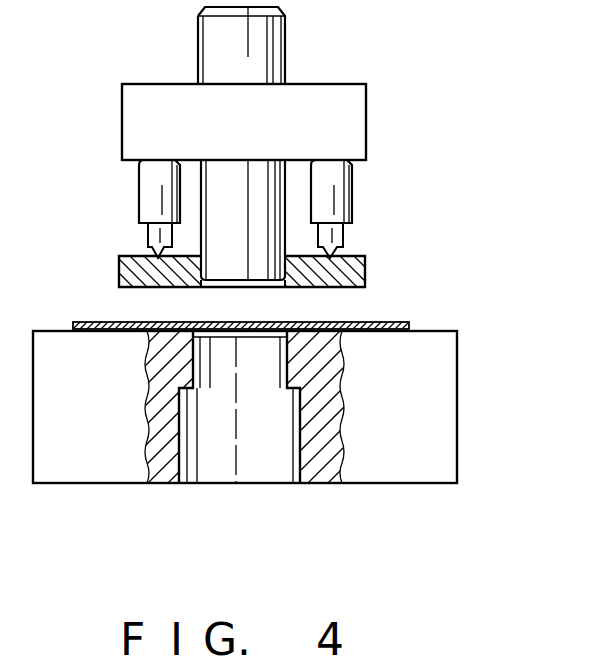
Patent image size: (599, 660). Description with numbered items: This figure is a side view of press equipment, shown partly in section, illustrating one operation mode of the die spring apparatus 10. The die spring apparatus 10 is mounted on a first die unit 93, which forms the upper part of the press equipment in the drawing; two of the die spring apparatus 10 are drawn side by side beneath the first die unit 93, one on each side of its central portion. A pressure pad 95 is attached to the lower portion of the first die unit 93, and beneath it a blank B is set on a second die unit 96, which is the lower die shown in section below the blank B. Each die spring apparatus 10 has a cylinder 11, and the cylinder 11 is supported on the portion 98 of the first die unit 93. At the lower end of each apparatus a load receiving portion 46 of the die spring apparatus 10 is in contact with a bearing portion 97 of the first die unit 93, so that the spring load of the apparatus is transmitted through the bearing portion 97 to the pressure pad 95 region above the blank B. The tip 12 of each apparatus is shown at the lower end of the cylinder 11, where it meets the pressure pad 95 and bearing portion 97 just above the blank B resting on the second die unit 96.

The first die unit 93 is at (372, 128).
The portion 98 is at (167, 160).
The die spring apparatus 10 is at (257, 194).
The cylinder 11 is at (138, 197).
The screw tip 12 is at (153, 237).
The bearing portion 97 is at (123, 248).
The pressure pad 95 is at (361, 270).
The load receiving portion 46 is at (157, 262).
The blank B is at (335, 322).
The second die unit 96 is at (457, 353).